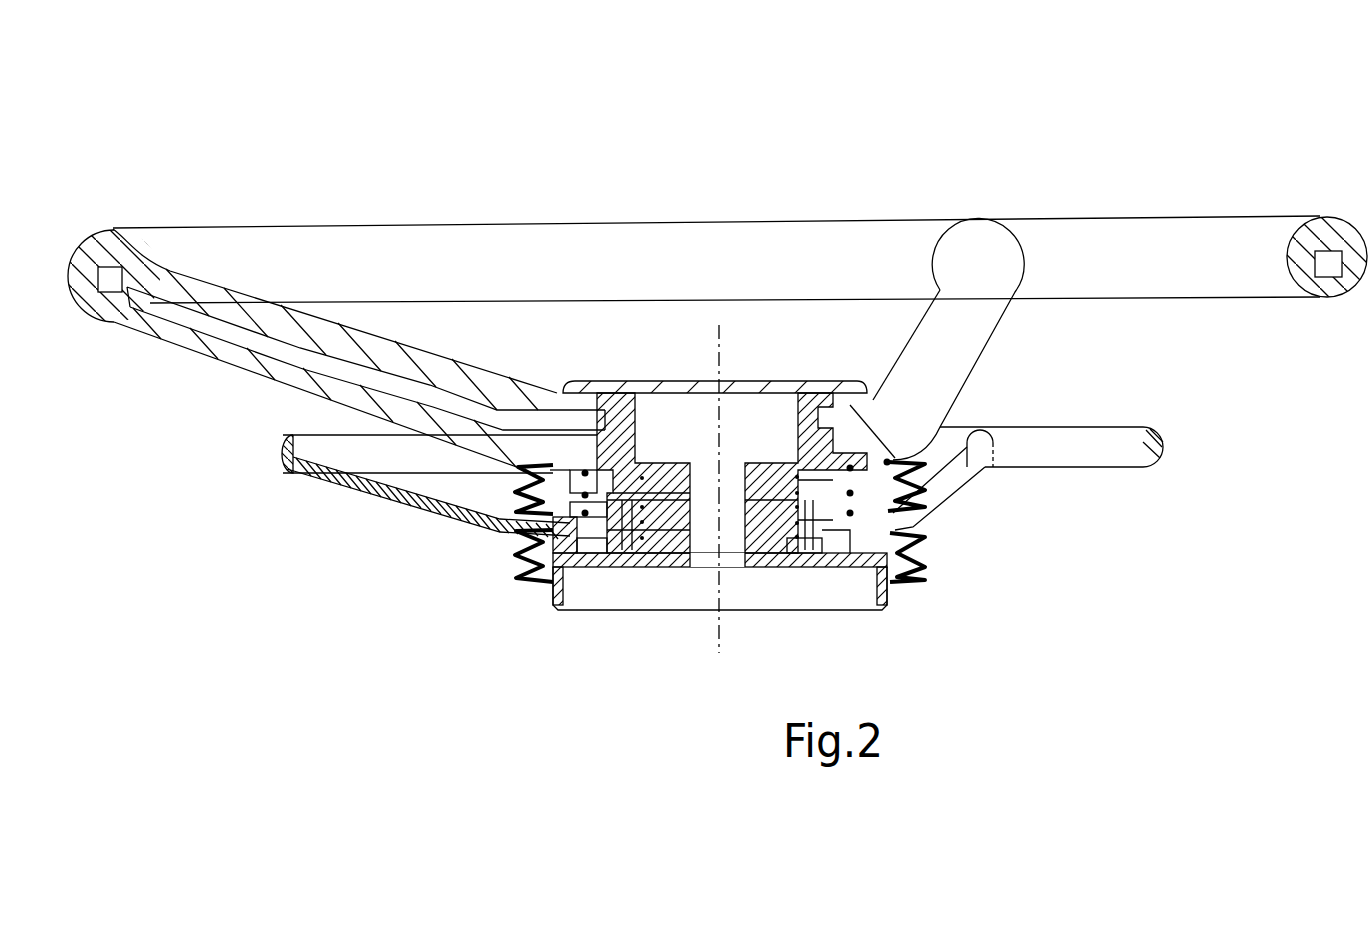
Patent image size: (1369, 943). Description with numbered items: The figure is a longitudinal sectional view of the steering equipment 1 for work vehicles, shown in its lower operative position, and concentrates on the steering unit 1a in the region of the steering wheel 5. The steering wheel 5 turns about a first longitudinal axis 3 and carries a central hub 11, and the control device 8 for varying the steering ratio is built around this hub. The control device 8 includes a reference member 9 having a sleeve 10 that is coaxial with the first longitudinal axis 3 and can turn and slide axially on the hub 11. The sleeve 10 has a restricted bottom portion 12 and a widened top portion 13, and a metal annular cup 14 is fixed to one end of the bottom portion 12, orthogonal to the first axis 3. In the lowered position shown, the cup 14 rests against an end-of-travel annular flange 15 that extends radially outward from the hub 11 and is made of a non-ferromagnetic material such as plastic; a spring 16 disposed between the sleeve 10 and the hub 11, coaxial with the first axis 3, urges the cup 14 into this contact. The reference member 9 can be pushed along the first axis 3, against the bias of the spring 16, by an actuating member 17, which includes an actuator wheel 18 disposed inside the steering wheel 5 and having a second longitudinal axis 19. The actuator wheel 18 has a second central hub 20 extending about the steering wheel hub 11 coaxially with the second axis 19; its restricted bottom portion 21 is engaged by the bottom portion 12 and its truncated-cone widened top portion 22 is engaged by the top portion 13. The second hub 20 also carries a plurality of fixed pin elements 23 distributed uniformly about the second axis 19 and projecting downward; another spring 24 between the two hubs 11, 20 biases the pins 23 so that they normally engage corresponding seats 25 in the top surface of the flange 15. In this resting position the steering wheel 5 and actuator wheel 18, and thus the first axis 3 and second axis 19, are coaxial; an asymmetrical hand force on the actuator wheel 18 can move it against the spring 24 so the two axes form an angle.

The steering equipment 1 is at (388, 190).
The steering unit 1a is at (1233, 183).
The steering wheel 5 is at (205, 240).
The first longitudinal axis 3 is at (722, 350).
The second longitudinal axis 19 is at (720, 352).
The control device 8 is at (426, 522).
The reference member 9 is at (893, 510).
The sleeve 10 is at (603, 562).
The central hub 11 is at (815, 455).
The restricted bottom portion 12 is at (790, 558).
The widened top portion 13 is at (793, 468).
The metal annular cup 14 is at (823, 558).
The annular flange 15 is at (665, 562).
The spring 16 is at (672, 485).
The actuating member 17 is at (405, 513).
The actuator wheel 18 is at (282, 472).
The second central hub 20 is at (588, 545).
The restricted bottom portion 21 is at (639, 480).
The widened top portion 22 is at (587, 469).
The fixed pin elements 23 is at (512, 583).
The spring 24 is at (888, 458).
The seats 25 is at (925, 530).